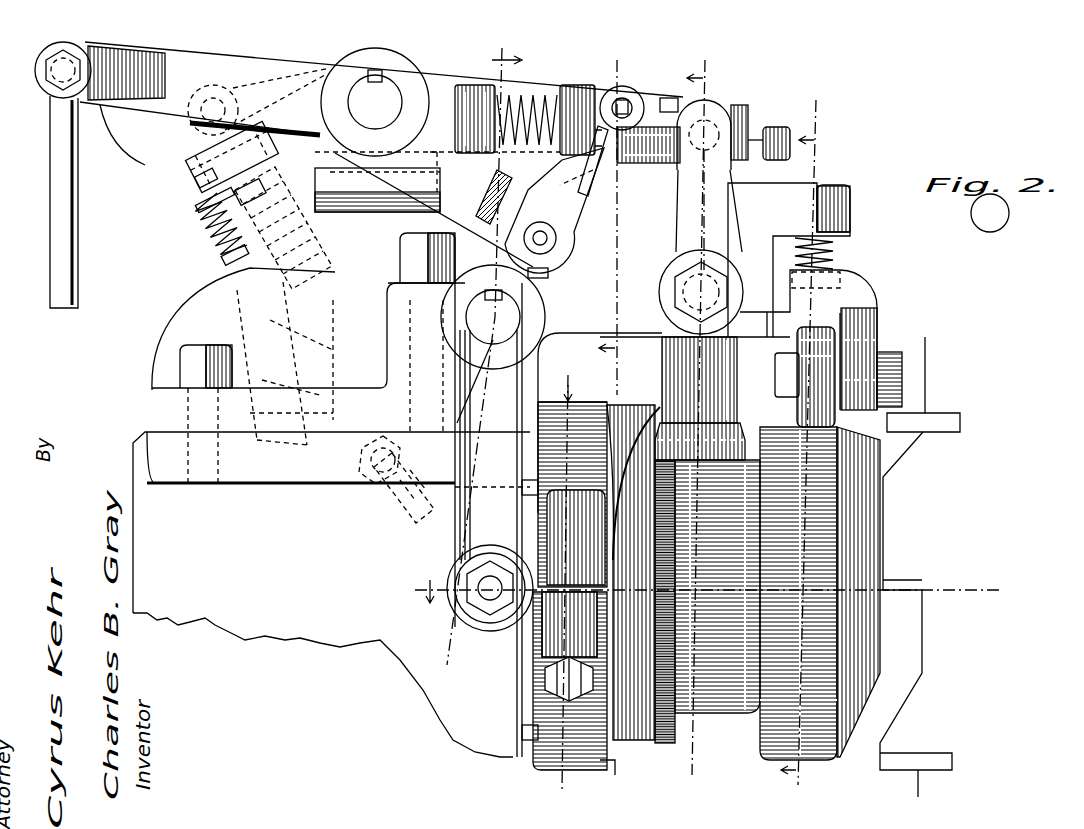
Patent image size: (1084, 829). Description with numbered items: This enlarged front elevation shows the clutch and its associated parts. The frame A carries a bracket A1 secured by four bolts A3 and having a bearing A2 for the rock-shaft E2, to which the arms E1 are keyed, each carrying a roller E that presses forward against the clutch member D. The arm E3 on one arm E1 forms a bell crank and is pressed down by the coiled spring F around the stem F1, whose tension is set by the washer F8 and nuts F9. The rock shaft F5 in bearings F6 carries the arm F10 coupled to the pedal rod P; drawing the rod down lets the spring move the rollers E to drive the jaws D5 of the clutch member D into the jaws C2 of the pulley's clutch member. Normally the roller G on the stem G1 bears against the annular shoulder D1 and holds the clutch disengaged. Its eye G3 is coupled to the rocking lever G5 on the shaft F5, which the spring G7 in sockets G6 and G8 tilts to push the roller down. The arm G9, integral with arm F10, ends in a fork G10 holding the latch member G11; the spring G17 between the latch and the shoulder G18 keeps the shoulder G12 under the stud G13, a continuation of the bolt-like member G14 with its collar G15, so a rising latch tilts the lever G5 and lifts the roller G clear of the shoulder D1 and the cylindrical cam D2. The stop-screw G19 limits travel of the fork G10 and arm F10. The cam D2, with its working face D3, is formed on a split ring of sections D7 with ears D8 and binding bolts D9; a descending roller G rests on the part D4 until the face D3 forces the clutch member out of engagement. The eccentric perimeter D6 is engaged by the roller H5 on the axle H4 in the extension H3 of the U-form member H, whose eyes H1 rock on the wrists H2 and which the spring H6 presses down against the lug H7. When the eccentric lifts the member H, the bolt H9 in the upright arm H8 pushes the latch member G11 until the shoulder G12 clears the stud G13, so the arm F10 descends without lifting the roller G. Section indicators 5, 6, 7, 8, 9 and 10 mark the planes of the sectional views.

The pedal rod P is at (53, 263).
The arm F10 is at (230, 68).
The arm E3 is at (188, 132).
The rock shaft F5 is at (375, 102).
The bearings F6 is at (377, 180).
The fork G10 is at (480, 218).
The socket G6 is at (183, 152).
The expanding coiled spring G7 is at (200, 175).
The socket G8 is at (253, 193).
The nuts F9 is at (203, 192).
The expanding coiled spring F is at (217, 228).
The stem F1 is at (233, 250).
The washer F8 is at (233, 207).
The frame A is at (278, 630).
The bracket A1 is at (197, 332).
The bearing A2 is at (535, 315).
The bolts A3 is at (195, 370).
The rock-shaft E2 is at (493, 317).
The arm E1 is at (488, 520).
The rollers E is at (527, 640).
The eye G3 is at (670, 177).
The shoulder G18 is at (457, 85).
The expanding coiled spring G17 is at (520, 103).
The bolt-like member G14 is at (638, 92).
The fixed collar G15 is at (670, 98).
The stud G13 is at (692, 96).
The shoulder G12 is at (605, 168).
The latch member G11 is at (587, 207).
The arm G9 is at (478, 197).
The adjustable stop-screw G19 is at (530, 275).
The rocking lever G5 is at (703, 100).
The bolt H9 is at (780, 113).
The upright arm H8 is at (709, 210).
The bolt-form axle or wrist H2 is at (688, 292).
The eyes H1 is at (710, 260).
The horizontal lug H7 is at (852, 214).
The expanding coiled spring H6 is at (835, 252).
The U-form member H is at (790, 297).
The roller H5 is at (850, 340).
The downward extension H3 is at (877, 317).
The axle H4 is at (903, 377).
The upright cylindrical stem G1 is at (665, 380).
The roller G is at (742, 450).
The cam D2 is at (572, 494).
The binding bolts D9 is at (573, 707).
The ears D8 is at (570, 640).
The part D4 is at (623, 750).
The annular shoulder D1 is at (662, 733).
The clutch member D is at (717, 603).
The working face D3 is at (607, 772).
The jaws D5 is at (868, 482).
The exterior or perimeter D6 is at (813, 700).
The sections D7 is at (530, 487).
The jaws C2 is at (897, 580).
The section line 10 is at (487, 349).
The section line 9 is at (621, 218).
The section line 8 is at (691, 415).
The section line 7 is at (560, 577).
The section line 6 is at (805, 447).
The section line 5 is at (710, 591).